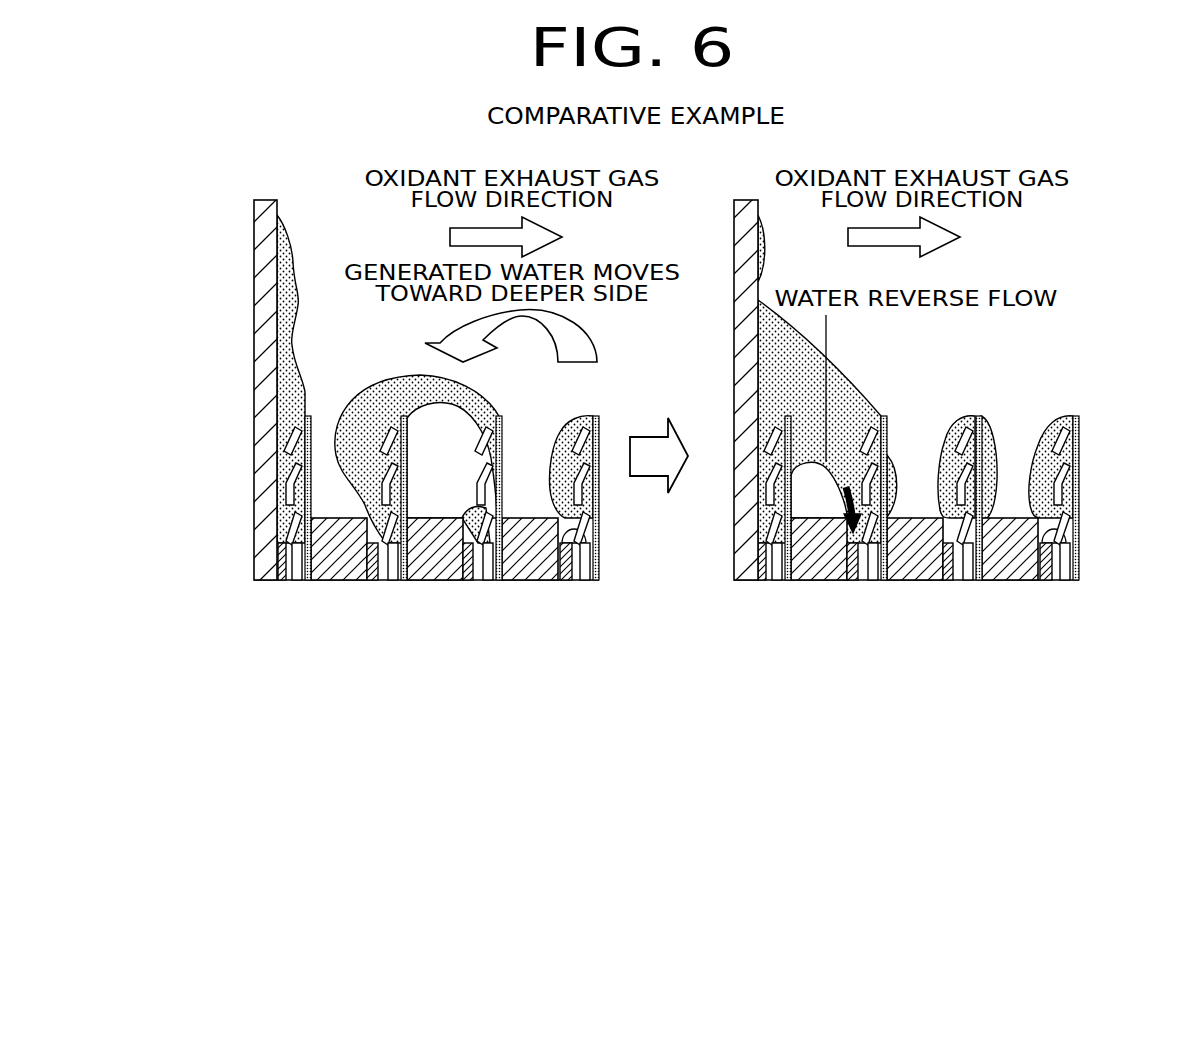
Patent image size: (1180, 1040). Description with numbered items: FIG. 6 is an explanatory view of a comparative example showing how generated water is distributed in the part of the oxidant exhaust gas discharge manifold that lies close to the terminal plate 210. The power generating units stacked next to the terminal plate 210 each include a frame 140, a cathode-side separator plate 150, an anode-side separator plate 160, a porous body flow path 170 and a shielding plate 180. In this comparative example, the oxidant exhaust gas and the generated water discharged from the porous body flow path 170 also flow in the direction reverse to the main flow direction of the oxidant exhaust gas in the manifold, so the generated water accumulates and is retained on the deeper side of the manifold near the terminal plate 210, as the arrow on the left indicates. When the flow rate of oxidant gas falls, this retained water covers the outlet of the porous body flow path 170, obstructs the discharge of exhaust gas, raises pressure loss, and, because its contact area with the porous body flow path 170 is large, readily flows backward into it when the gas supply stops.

The frame 140 is at (306, 582).
The cathode-side separator plate 150 is at (279, 582).
The anode-side separator plate 160 is at (367, 582).
The porous body flow path 170 is at (292, 582).
The shielding plate 180 is at (302, 582).
The terminal plate 210 is at (254, 360).